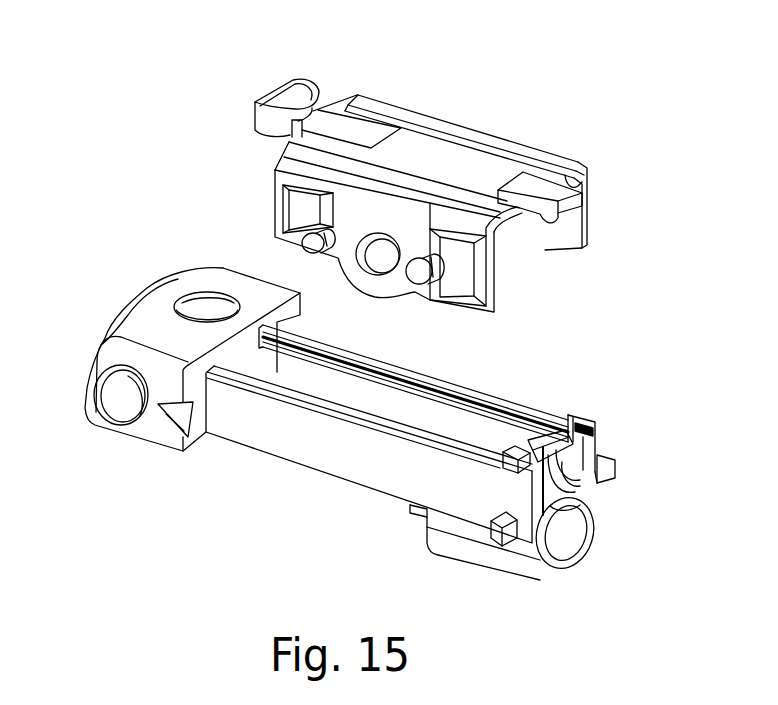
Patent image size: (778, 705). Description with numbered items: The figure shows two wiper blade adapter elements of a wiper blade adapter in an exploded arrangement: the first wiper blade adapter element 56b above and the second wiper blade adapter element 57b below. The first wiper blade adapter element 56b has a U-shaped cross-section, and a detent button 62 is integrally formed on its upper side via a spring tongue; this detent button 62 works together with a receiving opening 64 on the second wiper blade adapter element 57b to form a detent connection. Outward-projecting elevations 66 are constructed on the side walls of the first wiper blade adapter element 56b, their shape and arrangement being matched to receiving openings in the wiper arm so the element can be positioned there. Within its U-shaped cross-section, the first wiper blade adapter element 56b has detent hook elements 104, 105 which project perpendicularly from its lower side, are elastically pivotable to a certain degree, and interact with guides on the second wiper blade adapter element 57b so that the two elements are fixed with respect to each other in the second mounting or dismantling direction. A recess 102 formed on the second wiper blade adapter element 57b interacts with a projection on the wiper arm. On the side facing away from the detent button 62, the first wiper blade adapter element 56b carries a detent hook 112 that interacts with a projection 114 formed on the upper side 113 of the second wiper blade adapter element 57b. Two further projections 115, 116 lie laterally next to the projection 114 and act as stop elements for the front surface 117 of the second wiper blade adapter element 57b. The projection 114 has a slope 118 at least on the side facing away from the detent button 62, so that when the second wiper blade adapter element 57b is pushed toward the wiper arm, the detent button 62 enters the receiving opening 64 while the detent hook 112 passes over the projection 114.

The first wiper blade adapter element 56b is at (512, 138).
The detent button 62 is at (293, 95).
The detent hook 112 is at (578, 180).
The front surface 117 is at (517, 208).
The elevations 66 is at (421, 279).
The second wiper blade adapter element 57b is at (347, 456).
The receiving opening 64 is at (205, 318).
The recess 102 is at (165, 425).
The detent hook element 104 is at (302, 398).
The detent hook element 105 is at (468, 400).
The upper side 113 is at (533, 430).
The further projection 116 is at (583, 425).
The projection 114 is at (565, 425).
The slope 118 is at (588, 487).
The further projection 115 is at (478, 478).